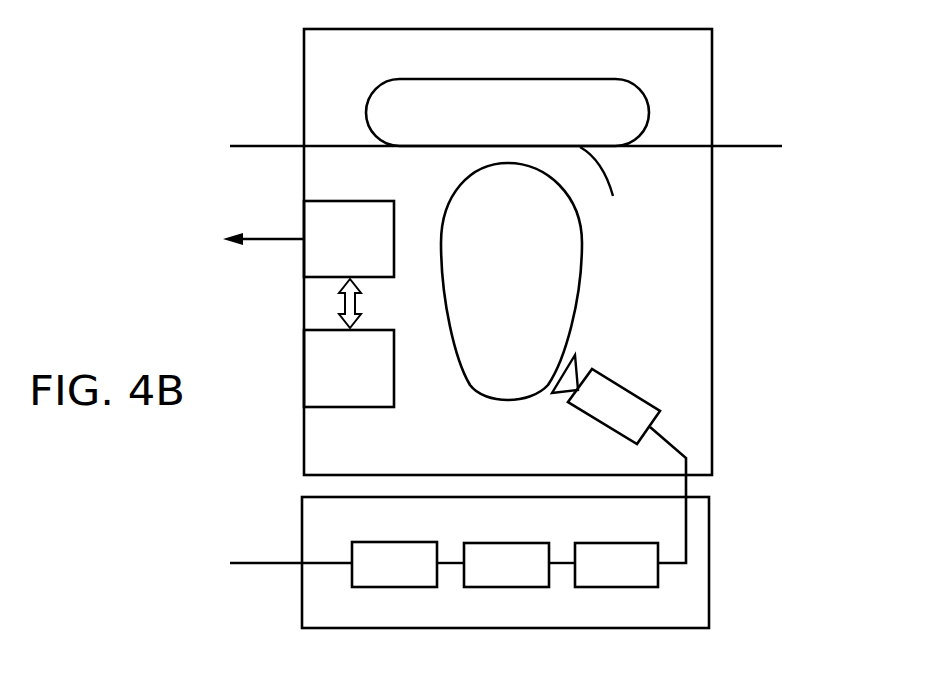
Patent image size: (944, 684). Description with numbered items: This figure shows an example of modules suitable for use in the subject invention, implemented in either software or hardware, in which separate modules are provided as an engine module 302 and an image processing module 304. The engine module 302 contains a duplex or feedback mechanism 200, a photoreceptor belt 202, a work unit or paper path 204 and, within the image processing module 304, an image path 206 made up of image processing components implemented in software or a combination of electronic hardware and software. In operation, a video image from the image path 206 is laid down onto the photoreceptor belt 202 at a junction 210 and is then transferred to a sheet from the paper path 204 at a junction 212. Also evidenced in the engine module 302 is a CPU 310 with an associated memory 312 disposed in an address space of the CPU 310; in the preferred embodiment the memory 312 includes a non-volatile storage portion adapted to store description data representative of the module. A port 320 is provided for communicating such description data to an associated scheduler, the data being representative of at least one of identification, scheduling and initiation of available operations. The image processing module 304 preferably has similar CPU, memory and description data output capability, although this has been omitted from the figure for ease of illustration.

The duplex or feedback mechanism 200 is at (649, 113).
The photoreceptor belt 202 is at (580, 311).
The work unit or paper path 204 is at (288, 148).
The image path 206 is at (287, 563).
The junction 210 is at (606, 363).
The junction 212 is at (505, 137).
The engine module 302 is at (713, 237).
The image processing module 304 is at (710, 562).
The CPU 310 is at (338, 201).
The memory 312 is at (333, 407).
The port 320 is at (283, 239).